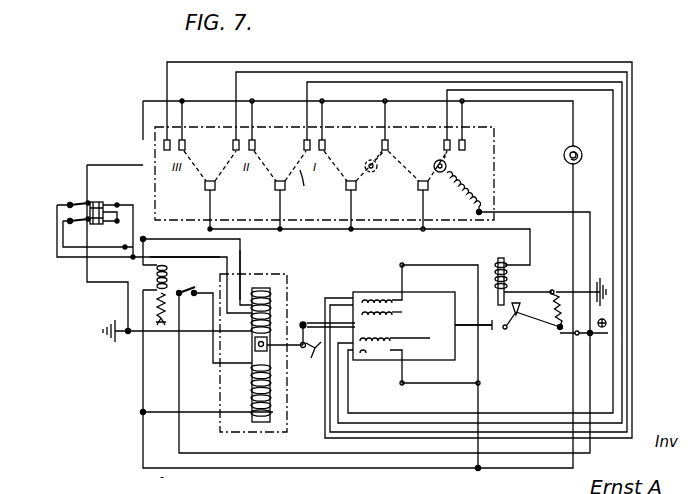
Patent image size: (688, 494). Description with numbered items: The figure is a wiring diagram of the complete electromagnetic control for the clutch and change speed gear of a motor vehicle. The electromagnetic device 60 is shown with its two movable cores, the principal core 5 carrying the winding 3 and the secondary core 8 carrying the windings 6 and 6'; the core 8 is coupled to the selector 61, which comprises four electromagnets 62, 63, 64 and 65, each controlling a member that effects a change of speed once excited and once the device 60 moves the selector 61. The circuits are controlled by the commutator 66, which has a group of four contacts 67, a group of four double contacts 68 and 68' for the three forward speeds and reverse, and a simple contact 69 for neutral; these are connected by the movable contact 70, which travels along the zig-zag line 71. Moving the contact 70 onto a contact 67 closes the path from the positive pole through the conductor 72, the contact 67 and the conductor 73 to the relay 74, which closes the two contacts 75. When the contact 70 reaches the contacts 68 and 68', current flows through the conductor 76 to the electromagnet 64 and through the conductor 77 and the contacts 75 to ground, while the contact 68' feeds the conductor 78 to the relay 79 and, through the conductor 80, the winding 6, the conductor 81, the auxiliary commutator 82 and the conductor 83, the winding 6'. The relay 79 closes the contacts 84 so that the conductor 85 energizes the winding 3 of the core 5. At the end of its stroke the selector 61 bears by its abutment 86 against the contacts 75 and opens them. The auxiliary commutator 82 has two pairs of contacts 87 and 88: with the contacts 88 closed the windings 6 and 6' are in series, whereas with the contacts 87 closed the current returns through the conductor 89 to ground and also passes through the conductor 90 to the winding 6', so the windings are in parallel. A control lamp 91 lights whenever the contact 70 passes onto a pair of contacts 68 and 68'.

The winding of the principal core 3 is at (272, 388).
The principal core 5 is at (263, 422).
The winding of the secondary core 6 is at (278, 296).
The winding of the secondary core 6' is at (279, 316).
The secondary core 8 is at (263, 288).
The electromagnetic device 60 is at (288, 274).
The selector 61 is at (448, 292).
The electromagnet 62 is at (378, 297).
The electromagnet 63 is at (362, 308).
The electromagnet 64 is at (392, 339).
The electromagnet 65 is at (371, 358).
The commutator 66 is at (494, 145).
The contact 67 is at (275, 186).
The double contact 68 is at (226, 126).
The double contact 68' is at (264, 146).
The simple contact 69 is at (388, 146).
The movable contact 70 is at (434, 165).
The zig-zag line 71 is at (310, 184).
The conductor 72 is at (590, 240).
The conductor 73 is at (444, 230).
The relay 74 is at (550, 282).
The contacts 75 is at (556, 333).
The conductor 76 is at (366, 80).
The conductor 77 is at (528, 468).
The conductor 78 is at (143, 147).
The relay 79 is at (156, 273).
The conductor 80 is at (242, 256).
The conductor 81 is at (176, 246).
The auxiliary commutator 82 is at (96, 202).
The conductor 83 is at (185, 258).
The contacts 84 is at (188, 298).
The conductor 85 is at (329, 455).
The abutment 86 is at (492, 331).
The contacts 87 is at (84, 201).
The contacts 88 is at (108, 224).
The conductor 89 is at (87, 275).
The conductor 90 is at (88, 165).
The control lamp 91 is at (582, 157).